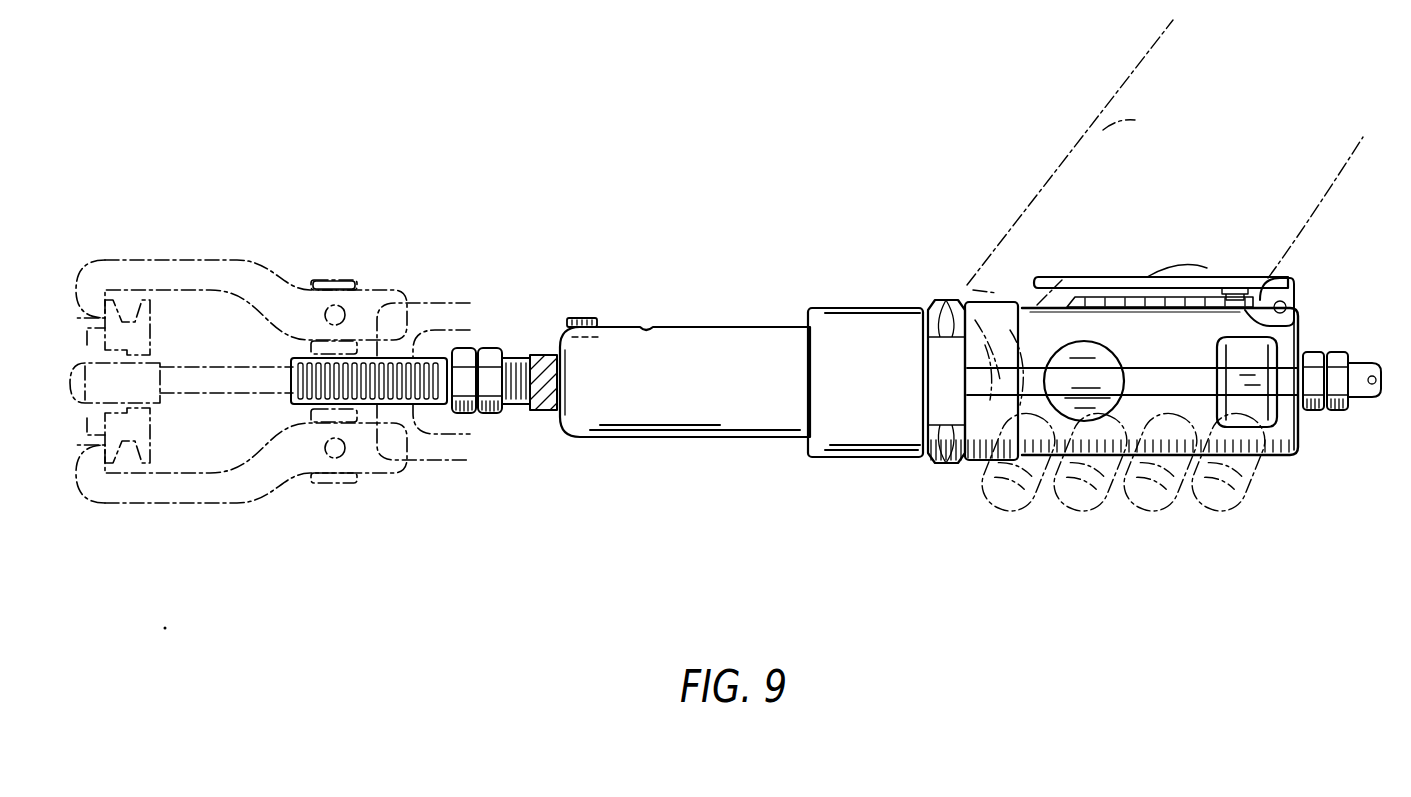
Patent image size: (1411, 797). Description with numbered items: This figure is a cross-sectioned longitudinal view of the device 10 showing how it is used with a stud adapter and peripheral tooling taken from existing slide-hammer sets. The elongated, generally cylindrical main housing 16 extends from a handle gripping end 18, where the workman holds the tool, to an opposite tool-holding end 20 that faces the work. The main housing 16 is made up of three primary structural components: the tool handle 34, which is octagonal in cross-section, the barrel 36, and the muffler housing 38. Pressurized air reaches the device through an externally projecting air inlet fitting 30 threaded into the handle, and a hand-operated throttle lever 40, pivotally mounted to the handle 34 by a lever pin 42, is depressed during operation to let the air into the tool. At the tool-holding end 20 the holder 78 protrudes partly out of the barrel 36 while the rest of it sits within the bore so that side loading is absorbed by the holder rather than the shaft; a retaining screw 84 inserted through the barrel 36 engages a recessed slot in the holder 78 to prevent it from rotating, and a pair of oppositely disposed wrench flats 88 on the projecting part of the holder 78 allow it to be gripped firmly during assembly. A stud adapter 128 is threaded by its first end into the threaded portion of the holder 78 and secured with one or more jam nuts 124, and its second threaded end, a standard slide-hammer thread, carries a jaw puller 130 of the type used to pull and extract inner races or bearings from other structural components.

The device 10 is at (687, 493).
The main housing 16 is at (757, 273).
The handle gripping end 18 is at (1320, 490).
The tool-holding end 20 is at (530, 514).
The air inlet fitting 30 is at (1315, 410).
The tool handle 34 is at (1287, 458).
The barrel 36 is at (673, 320).
The muffler housing 38 is at (877, 477).
The throttle lever 40 is at (1037, 274).
The lever pin 42 is at (1284, 300).
The holder 78 is at (540, 412).
The retaining screw 84 is at (568, 318).
The wrench flats 88 is at (510, 355).
The jam nuts 124 is at (493, 418).
The stud adapter 128 is at (395, 470).
The jaw puller 130 is at (352, 280).